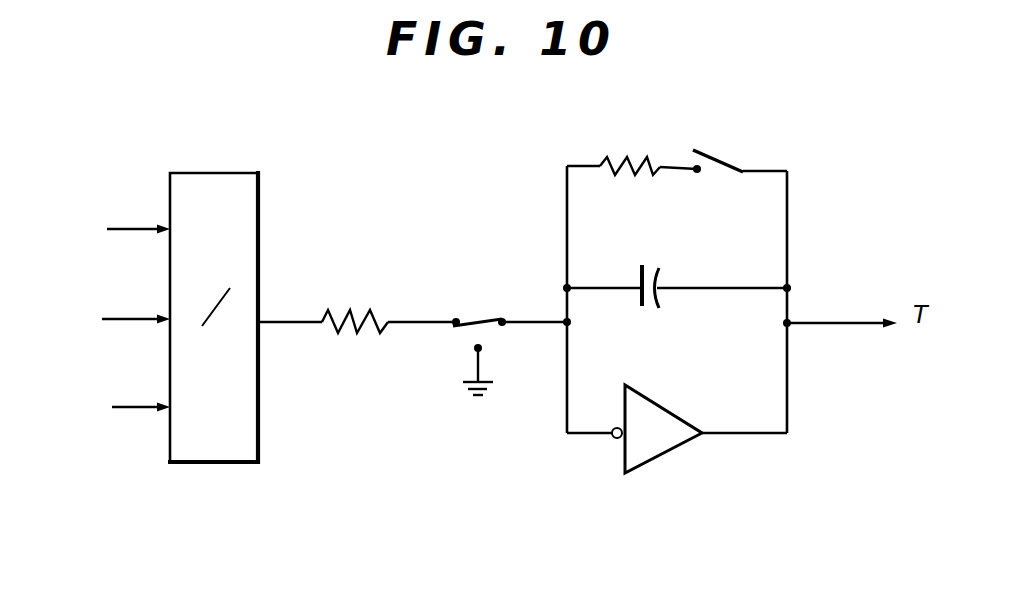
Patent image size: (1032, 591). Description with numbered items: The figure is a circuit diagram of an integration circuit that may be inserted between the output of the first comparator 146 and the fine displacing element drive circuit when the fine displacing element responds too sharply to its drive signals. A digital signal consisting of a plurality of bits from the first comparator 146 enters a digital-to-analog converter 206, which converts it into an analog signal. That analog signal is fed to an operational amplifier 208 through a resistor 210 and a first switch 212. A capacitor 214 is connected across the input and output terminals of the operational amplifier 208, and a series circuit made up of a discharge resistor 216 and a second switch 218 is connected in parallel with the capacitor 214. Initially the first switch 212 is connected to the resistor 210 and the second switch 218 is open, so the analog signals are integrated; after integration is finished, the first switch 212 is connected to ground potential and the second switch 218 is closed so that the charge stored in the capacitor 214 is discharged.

The digital-to-analog converter 206 is at (200, 448).
The first comparator 146 is at (124, 401).
The resistor 210 is at (367, 293).
The first switch 212 is at (468, 320).
The discharge resistor 216 is at (633, 151).
The second switch 218 is at (722, 157).
The capacitor 214 is at (664, 297).
The operational amplifier 208 is at (661, 442).